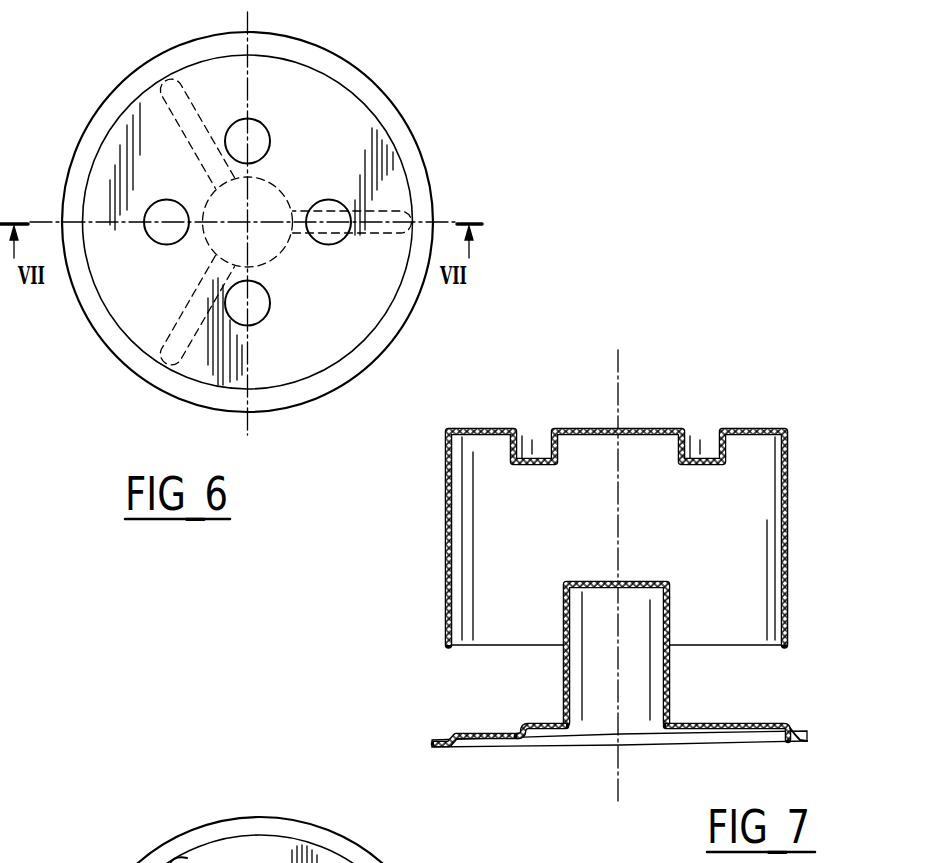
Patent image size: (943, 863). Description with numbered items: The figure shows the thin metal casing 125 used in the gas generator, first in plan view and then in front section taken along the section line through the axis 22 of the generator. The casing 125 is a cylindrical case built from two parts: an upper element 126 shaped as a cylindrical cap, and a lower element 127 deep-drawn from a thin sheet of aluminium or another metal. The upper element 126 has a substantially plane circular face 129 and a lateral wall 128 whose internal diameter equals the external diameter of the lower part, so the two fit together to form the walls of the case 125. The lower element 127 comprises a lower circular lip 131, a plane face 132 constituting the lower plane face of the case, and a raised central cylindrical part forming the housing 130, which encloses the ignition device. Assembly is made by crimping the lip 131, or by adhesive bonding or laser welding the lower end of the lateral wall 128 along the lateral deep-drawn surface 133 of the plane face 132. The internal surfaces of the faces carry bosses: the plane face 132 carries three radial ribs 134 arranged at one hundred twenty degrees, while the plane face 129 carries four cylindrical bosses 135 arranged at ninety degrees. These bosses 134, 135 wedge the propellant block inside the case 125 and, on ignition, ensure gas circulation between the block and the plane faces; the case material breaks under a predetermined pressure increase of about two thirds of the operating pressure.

In FIG. 7, the axis of the generator 22 is at (618, 392).
In FIG. 6, the thin metal casing 125 is at (447, 150).
In FIG. 7, the upper element 126 is at (807, 498).
In FIG. 7, the lower element 127 is at (597, 756).
In FIG. 7, the lateral wall 128 is at (797, 578).
In FIG. 6, the plane face 129 is at (317, 97).
In FIG. 7, the plane face 129 is at (648, 430).
In FIG. 6, the central cylindrical housing 130 is at (277, 183).
In FIG. 7, the central cylindrical housing 130 is at (672, 612).
In FIG. 6, the lower circular lip 131 is at (130, 82).
In FIG. 7, the lower circular lip 131 is at (437, 742).
In FIG. 7, the plane face 132 is at (487, 733).
In FIG. 7, the lateral deep-drawn surface 133 is at (793, 731).
In FIG. 6, the radial ribs 134 is at (172, 362).
In FIG. 7, the radial ribs 134 is at (548, 724).
In FIG. 6, the cylindrical bosses 135 is at (172, 236).
In FIG. 7, the cylindrical bosses 135 is at (533, 466).